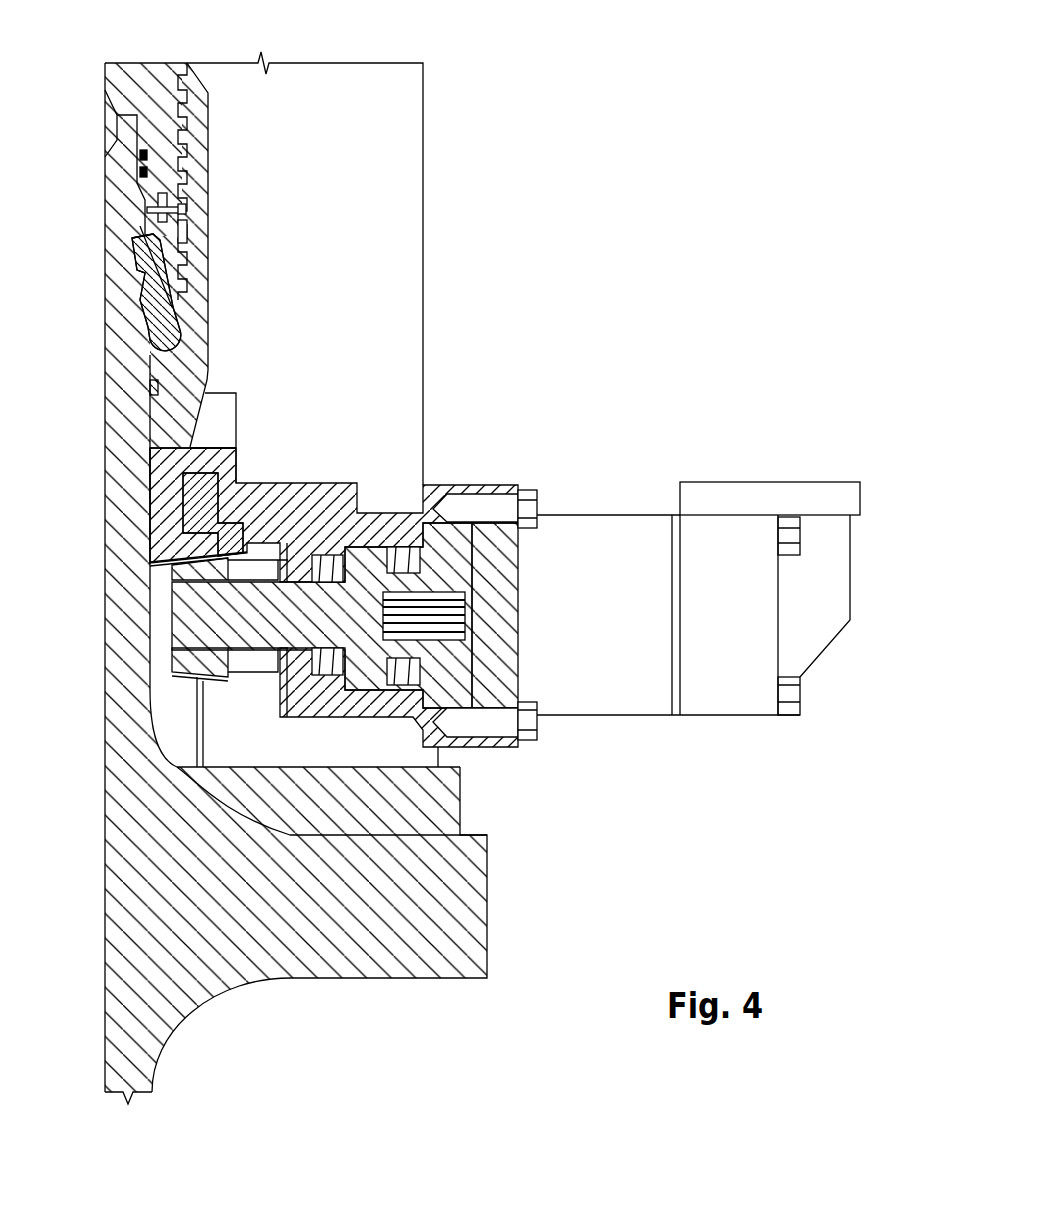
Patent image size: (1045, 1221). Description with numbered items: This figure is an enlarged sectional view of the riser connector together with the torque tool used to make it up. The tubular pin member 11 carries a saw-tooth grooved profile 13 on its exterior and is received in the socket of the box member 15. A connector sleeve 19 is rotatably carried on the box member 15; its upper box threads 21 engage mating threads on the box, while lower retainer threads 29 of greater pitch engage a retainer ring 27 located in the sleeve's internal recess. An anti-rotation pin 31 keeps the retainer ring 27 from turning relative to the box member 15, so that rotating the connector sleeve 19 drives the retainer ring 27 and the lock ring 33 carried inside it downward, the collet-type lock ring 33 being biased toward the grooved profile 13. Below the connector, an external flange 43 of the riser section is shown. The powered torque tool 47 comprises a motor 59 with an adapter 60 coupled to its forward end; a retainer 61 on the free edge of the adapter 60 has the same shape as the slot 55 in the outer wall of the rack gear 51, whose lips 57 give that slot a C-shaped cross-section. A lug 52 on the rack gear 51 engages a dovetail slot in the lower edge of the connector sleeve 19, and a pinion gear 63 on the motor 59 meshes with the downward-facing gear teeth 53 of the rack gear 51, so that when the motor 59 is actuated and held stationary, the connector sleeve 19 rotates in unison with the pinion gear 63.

The tubular pin member 11 is at (113, 378).
The grooved profile 13 is at (140, 310).
The box member 15 is at (138, 78).
The connector sleeve 19 is at (205, 205).
The box threads 21 is at (183, 80).
The retainer ring 27 is at (147, 210).
The retainer threads 29 is at (185, 232).
The anti-rotation pin 31 is at (150, 197).
The lock ring 33 is at (133, 277).
The external flange 43 is at (473, 860).
The powered torque tool 47 is at (662, 436).
The rack gear 51 is at (205, 548).
The lug 52 is at (212, 423).
The gear teeth 53 is at (178, 580).
The rack gear slot 55 is at (197, 506).
The lips 57 is at (228, 495).
The motor 59 is at (592, 532).
The adapter 60 is at (337, 500).
The retainer 61 is at (202, 480).
The pinion gear 63 is at (200, 675).